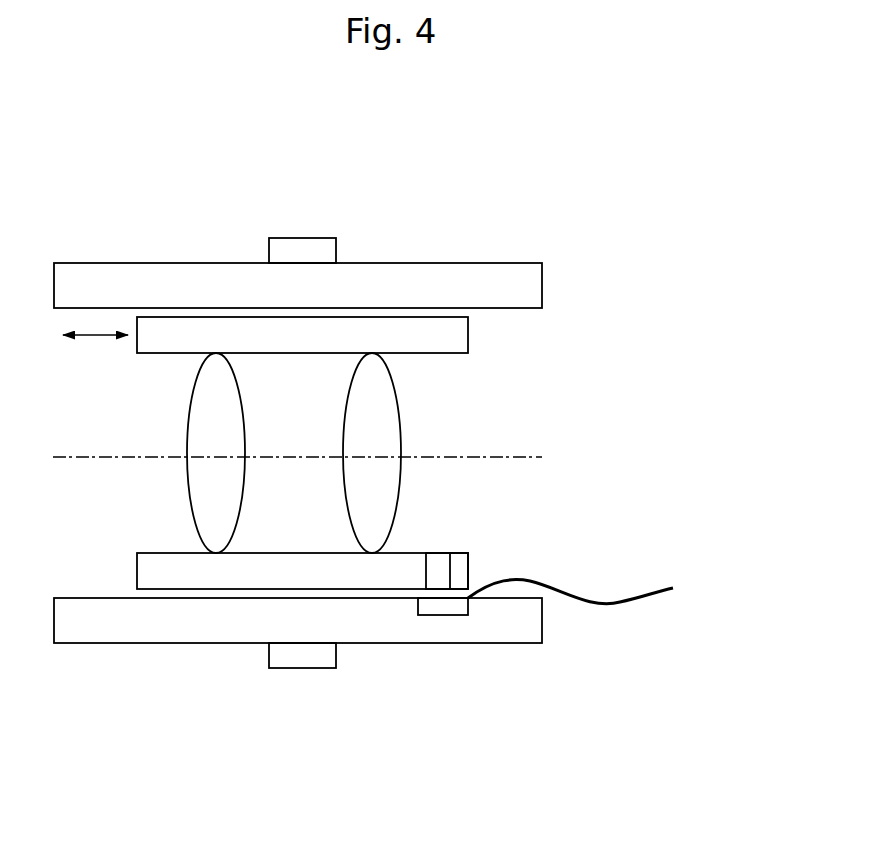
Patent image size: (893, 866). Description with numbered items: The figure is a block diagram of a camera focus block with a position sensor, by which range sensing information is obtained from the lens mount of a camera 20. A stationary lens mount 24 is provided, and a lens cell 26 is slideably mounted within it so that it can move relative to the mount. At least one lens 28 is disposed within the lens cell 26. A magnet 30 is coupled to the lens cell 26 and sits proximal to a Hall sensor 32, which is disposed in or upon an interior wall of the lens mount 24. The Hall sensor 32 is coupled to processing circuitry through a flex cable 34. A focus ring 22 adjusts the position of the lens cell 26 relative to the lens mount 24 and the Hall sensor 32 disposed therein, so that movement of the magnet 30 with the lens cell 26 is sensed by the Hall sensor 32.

The camera 20 is at (343, 199).
The focus ring 22 is at (337, 669).
The lens mount 24 is at (543, 263).
The lens cell 26 is at (458, 348).
The lens 28 is at (342, 457).
The magnet 30 is at (453, 552).
The Hall sensor 32 is at (448, 614).
The flex cable 34 is at (670, 583).